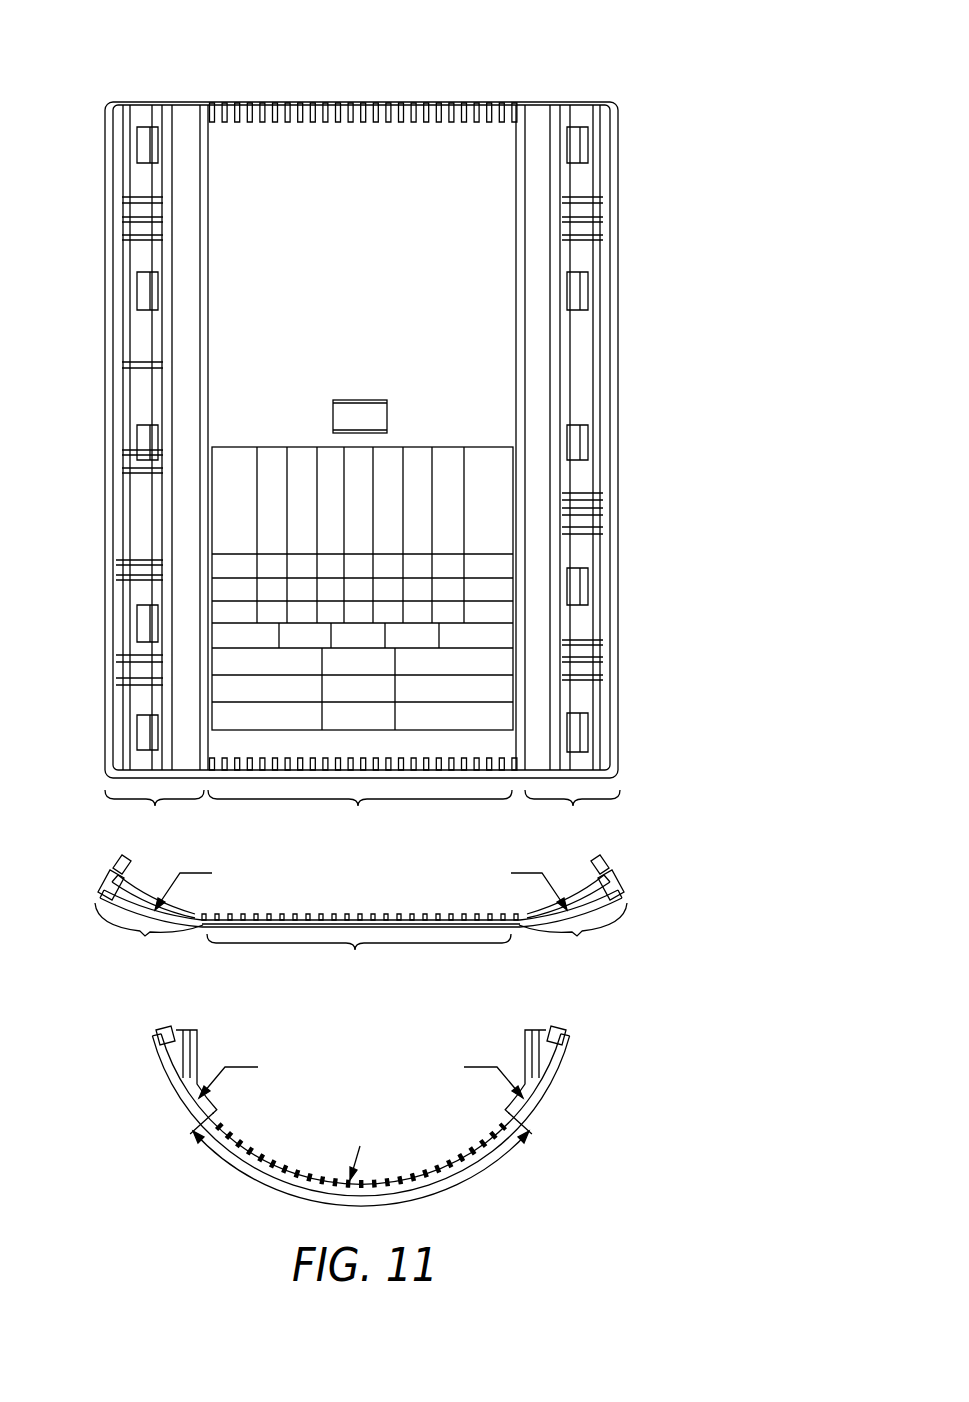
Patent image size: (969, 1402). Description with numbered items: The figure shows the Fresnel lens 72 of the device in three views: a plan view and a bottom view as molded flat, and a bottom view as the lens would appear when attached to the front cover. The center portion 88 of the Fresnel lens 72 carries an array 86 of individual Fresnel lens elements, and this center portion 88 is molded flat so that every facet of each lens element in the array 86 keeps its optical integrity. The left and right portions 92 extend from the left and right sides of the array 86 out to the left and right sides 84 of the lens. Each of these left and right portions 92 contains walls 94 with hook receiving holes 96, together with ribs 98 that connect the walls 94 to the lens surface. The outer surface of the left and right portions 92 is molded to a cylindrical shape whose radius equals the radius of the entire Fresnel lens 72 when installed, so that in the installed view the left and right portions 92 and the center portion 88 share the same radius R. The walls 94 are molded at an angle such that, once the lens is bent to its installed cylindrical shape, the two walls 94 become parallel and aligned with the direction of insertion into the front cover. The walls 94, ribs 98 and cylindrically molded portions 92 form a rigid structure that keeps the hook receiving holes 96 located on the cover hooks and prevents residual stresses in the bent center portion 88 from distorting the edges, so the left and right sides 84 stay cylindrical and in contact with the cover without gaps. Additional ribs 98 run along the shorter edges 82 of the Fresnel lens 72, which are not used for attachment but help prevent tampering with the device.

The Fresnel lens 72 is at (691, 703).
The shorter edges 82 is at (363, 102).
The left and right sides 84 is at (619, 166).
The array of Fresnel lens elements 86 is at (452, 447).
The center portion 88 is at (368, 1199).
The left and right portions 92 is at (551, 1080).
The walls 94 is at (123, 297).
The hook receiving holes 96 is at (590, 585).
The ribs 98 is at (438, 103).